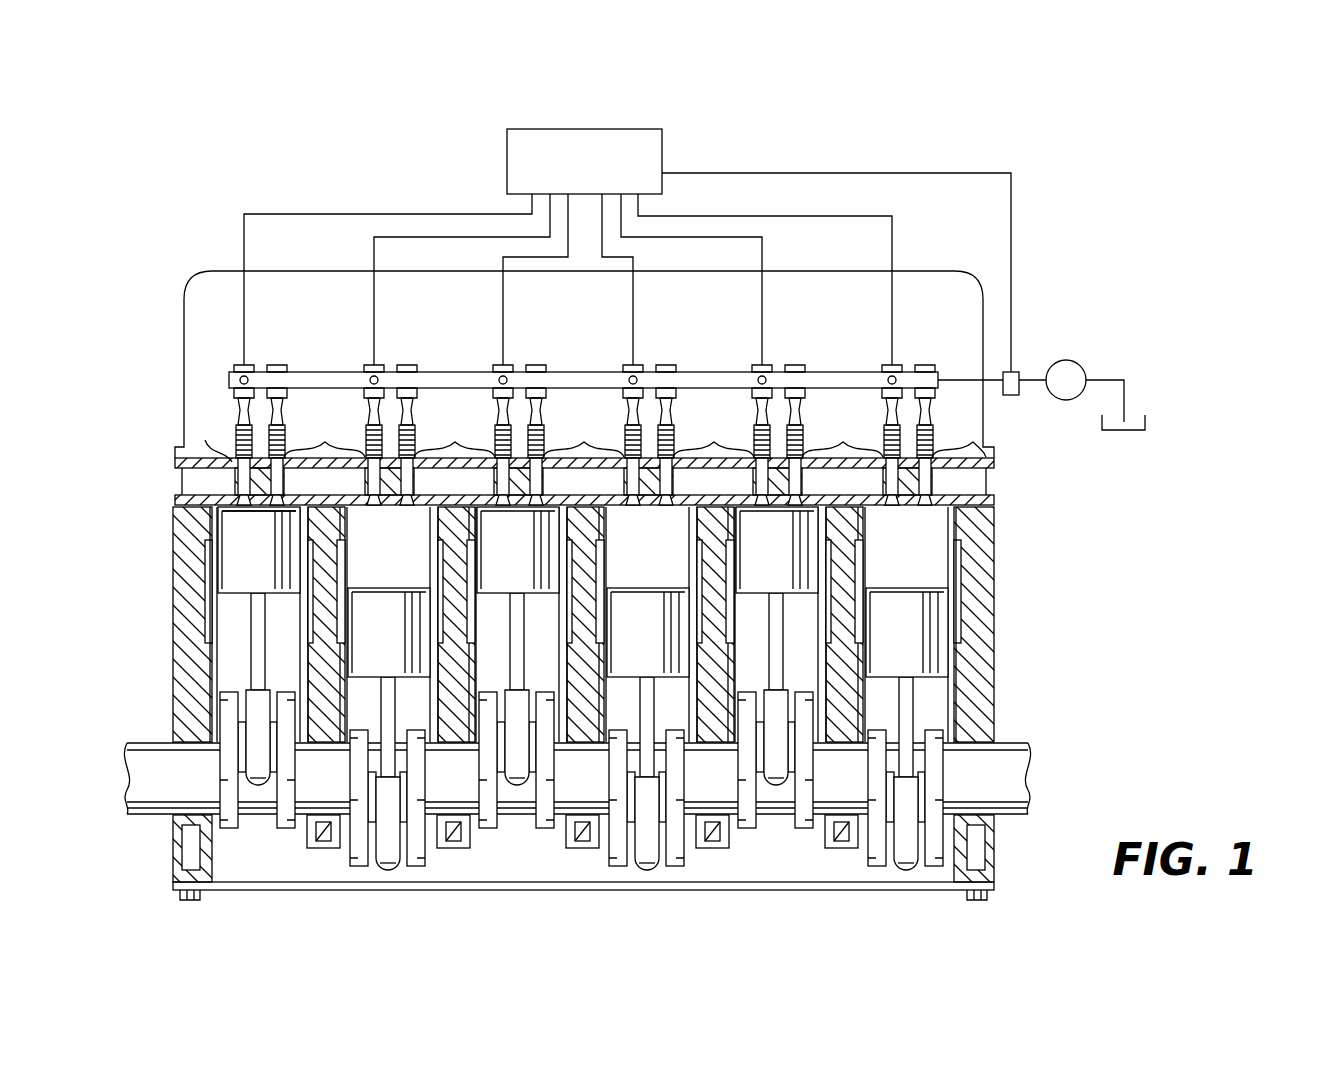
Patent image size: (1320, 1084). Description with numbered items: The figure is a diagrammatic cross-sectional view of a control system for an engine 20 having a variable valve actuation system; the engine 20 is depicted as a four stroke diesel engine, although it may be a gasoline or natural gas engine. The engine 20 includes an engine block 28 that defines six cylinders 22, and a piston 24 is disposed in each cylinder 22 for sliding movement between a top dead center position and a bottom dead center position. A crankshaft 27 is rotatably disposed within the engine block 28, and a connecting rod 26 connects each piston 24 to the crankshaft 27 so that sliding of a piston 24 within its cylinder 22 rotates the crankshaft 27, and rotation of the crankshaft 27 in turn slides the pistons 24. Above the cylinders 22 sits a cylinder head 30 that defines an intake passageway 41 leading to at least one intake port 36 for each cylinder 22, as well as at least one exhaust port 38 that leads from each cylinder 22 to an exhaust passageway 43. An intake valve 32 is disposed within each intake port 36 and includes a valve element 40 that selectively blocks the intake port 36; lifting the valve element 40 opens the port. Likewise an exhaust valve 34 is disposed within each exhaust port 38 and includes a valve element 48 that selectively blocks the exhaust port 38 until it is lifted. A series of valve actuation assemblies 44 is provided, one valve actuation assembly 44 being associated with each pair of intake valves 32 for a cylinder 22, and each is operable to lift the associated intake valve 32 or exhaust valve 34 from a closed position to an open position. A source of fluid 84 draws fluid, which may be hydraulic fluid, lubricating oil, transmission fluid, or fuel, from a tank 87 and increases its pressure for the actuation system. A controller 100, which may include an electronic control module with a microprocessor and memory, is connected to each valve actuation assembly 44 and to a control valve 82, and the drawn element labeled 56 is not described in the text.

The controller 100 is at (567, 172).
The engine 20 is at (1043, 272).
The cylinder 22 is at (271, 644).
The piston 24 is at (248, 585).
The connecting rod 26 is at (257, 663).
The crankshaft 27 is at (152, 782).
The engine block 28 is at (176, 512).
The cylinder head 30 is at (996, 490).
The intake valve 32 is at (583, 434).
The exhaust valve 34 is at (588, 436).
The intake port 36 is at (259, 541).
The exhaust port 38 is at (256, 508).
The valve element 40 is at (284, 508).
The intake passageway 41 is at (313, 493).
The exhaust passageway 43 is at (176, 460).
The valve actuation assembly 44 is at (277, 363).
The valve element 48 is at (232, 490).
The injector nozzle 56 is at (238, 415).
The control valve 82 is at (1010, 398).
The source of fluid 84 is at (1066, 360).
The tank 87 is at (1143, 415).